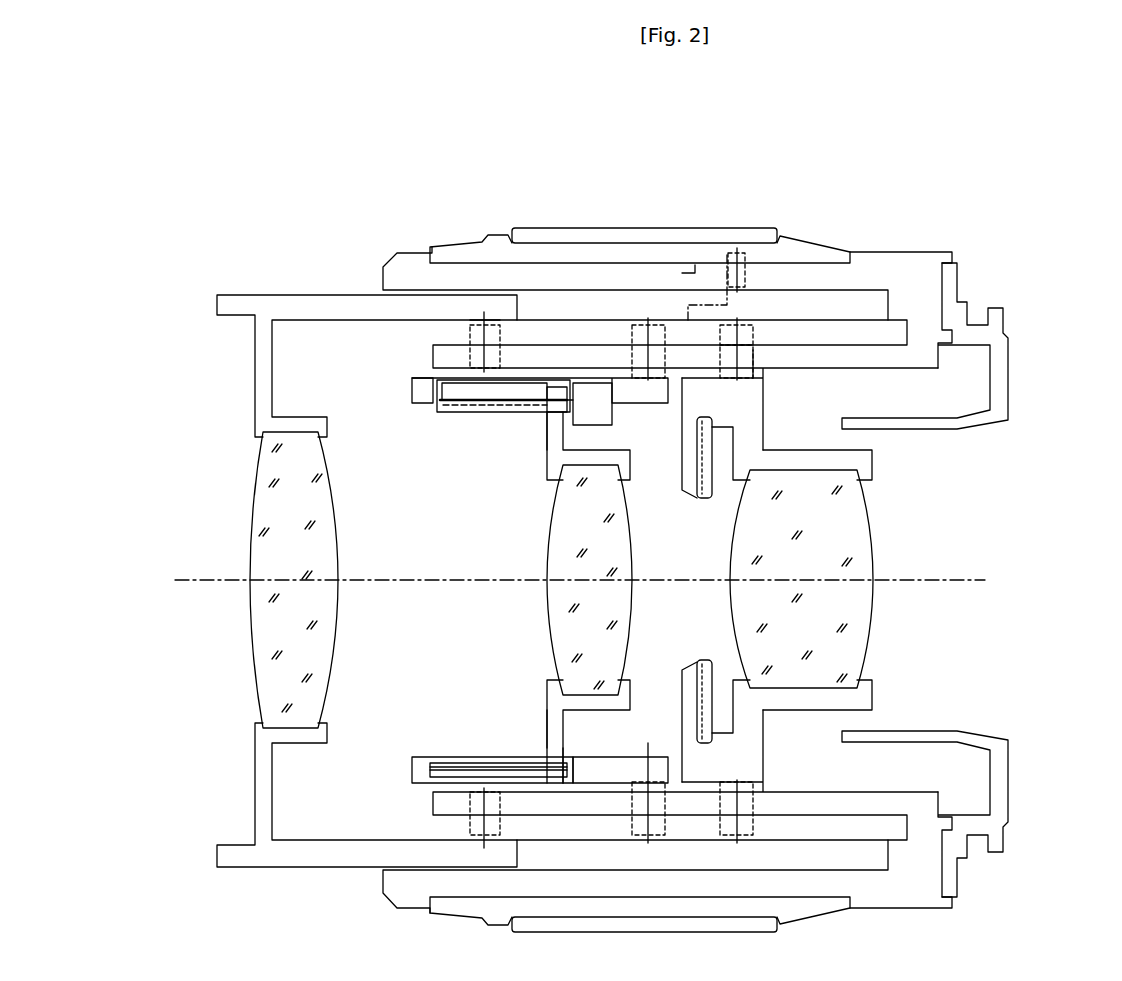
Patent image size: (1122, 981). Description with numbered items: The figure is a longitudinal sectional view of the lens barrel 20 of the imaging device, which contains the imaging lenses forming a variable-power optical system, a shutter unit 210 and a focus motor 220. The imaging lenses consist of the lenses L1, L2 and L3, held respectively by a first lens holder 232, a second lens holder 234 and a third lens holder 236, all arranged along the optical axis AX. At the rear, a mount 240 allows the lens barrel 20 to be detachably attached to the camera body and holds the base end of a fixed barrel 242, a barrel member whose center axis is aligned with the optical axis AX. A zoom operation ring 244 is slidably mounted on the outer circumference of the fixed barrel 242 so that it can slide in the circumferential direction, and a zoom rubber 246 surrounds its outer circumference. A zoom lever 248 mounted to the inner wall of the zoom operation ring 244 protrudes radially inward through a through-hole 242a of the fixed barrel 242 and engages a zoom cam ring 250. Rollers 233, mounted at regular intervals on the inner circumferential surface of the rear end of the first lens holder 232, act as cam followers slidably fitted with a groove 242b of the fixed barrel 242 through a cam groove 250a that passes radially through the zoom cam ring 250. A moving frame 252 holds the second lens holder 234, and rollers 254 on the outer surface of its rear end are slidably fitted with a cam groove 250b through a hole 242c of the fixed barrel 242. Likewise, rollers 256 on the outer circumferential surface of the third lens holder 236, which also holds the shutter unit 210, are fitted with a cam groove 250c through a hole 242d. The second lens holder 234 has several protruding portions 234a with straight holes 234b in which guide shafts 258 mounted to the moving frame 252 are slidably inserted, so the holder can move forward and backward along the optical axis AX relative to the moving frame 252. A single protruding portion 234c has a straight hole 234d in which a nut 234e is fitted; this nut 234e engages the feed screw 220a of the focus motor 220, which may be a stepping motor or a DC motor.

The lens barrel 20 is at (1017, 226).
The optical axis AX is at (567, 556).
The lens L1 is at (260, 512).
The lens L2 is at (550, 543).
The lens L3 is at (863, 567).
The shutter unit 210 is at (680, 497).
The focus motor 220 is at (558, 408).
The feed screw 220a is at (470, 410).
The first lens holder 232 is at (272, 300).
The rollers 233 is at (470, 357).
The second lens holder 234 is at (552, 698).
The protruding portions 234a is at (547, 728).
The straight holes 234b is at (547, 775).
The protruding portion 234c is at (548, 425).
The straight hole 234d is at (580, 418).
The nut 234e is at (547, 388).
The third lens holder 236 is at (872, 466).
The mount 240 is at (1003, 350).
The fixed barrel 242 is at (893, 330).
The through-hole 242a is at (700, 335).
The groove 242b is at (412, 402).
The hole 242c is at (688, 300).
The hole 242d is at (752, 358).
The zoom operation ring 244 is at (835, 250).
The zoom rubber 246 is at (572, 238).
The zoom lever 248 is at (742, 322).
The zoom cam ring 250 is at (893, 258).
The cam groove 250a is at (485, 322).
The cam groove 250b is at (633, 332).
The cam groove 250c is at (740, 290).
The moving frame 252 is at (415, 405).
The rollers 254 is at (553, 392).
The rollers 256 is at (752, 356).
The guide shafts 258 is at (438, 760).